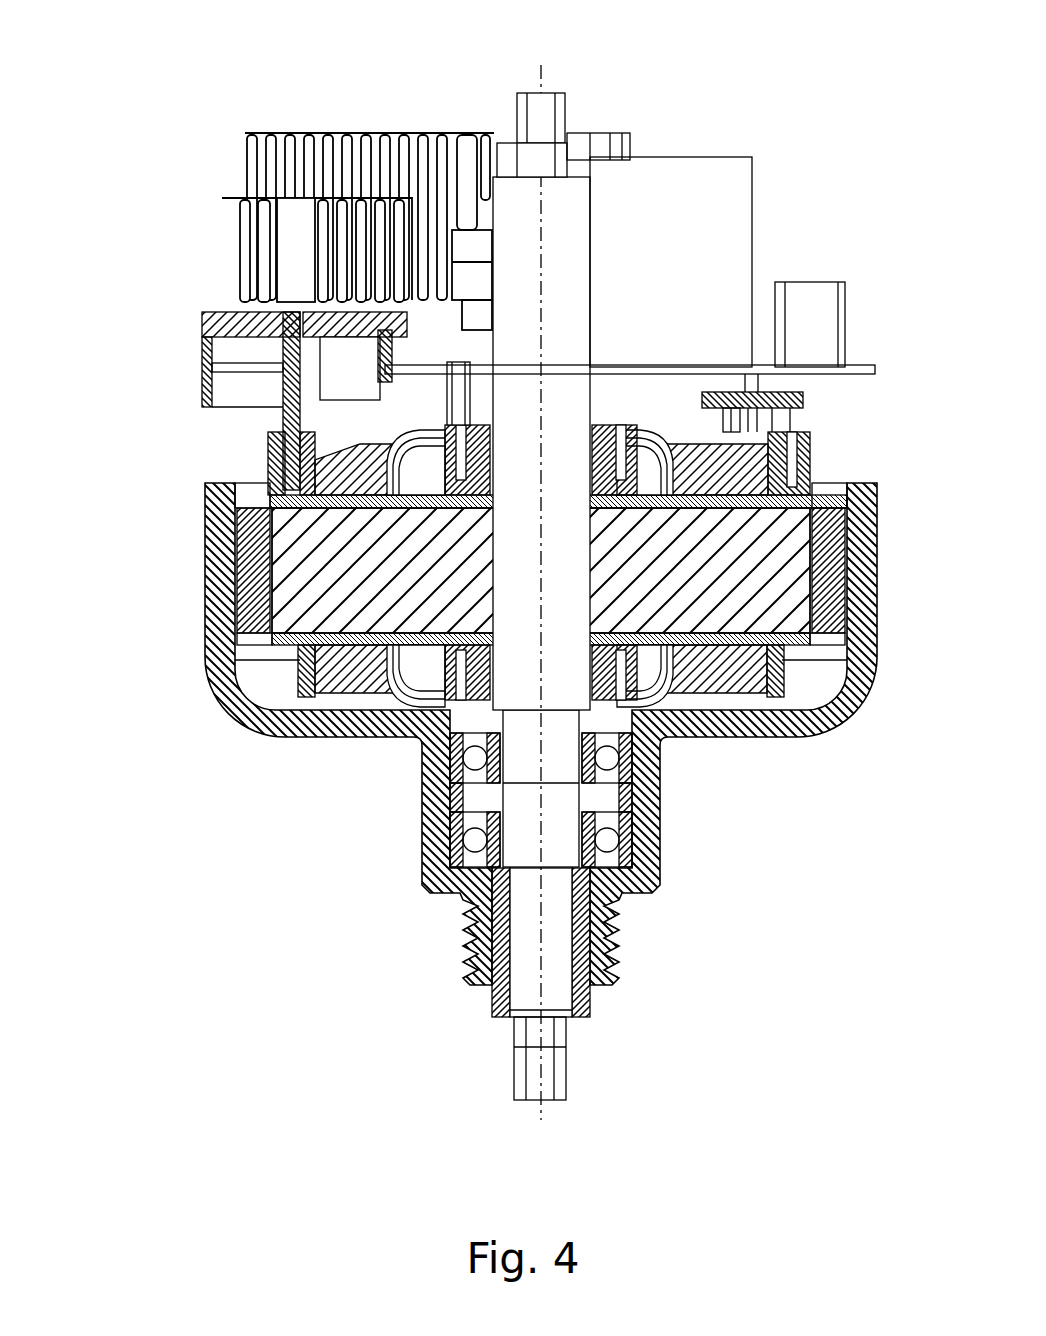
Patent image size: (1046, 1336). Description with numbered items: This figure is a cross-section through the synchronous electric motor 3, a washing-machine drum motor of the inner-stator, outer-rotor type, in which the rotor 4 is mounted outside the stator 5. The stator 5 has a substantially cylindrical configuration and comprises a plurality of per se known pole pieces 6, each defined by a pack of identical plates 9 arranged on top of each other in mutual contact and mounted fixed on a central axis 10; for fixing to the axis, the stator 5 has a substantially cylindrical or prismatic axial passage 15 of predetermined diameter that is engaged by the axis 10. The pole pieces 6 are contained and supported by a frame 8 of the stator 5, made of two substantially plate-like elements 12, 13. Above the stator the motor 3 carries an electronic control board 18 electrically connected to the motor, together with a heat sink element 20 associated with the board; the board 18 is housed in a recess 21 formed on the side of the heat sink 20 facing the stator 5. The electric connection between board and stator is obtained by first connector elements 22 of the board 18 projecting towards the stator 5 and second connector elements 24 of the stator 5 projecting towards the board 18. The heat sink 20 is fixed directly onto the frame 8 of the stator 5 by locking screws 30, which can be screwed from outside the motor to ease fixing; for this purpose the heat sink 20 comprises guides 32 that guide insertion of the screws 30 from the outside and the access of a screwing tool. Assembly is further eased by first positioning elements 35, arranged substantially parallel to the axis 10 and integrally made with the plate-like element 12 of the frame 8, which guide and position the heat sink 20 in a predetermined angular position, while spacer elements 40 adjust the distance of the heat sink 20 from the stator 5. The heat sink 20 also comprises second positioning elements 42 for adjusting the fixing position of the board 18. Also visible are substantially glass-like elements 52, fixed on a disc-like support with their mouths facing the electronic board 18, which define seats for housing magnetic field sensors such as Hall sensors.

The synchronous electric motor 3 is at (298, 990).
The rotor 4 is at (213, 640).
The stator 5 is at (435, 685).
The pole pieces 6 is at (753, 580).
The frame 8 is at (810, 498).
The plates 9 is at (658, 687).
The central axis 10 is at (540, 973).
The plate-like element 12 is at (376, 510).
The plate-like element 13 is at (285, 643).
The axial passage 15 is at (490, 1017).
The electronic control board 18 is at (780, 368).
The heat sink element 20 is at (410, 165).
The recess 21 is at (223, 397).
The first connector elements 22 is at (493, 369).
The second connector elements 24 is at (448, 430).
The locking screws 30 is at (290, 310).
The guides 32 is at (296, 237).
The first positioning elements 35 is at (260, 463).
The spacer elements 40 is at (278, 370).
The second positioning elements 42 is at (407, 333).
The glass-like elements 52 is at (772, 413).